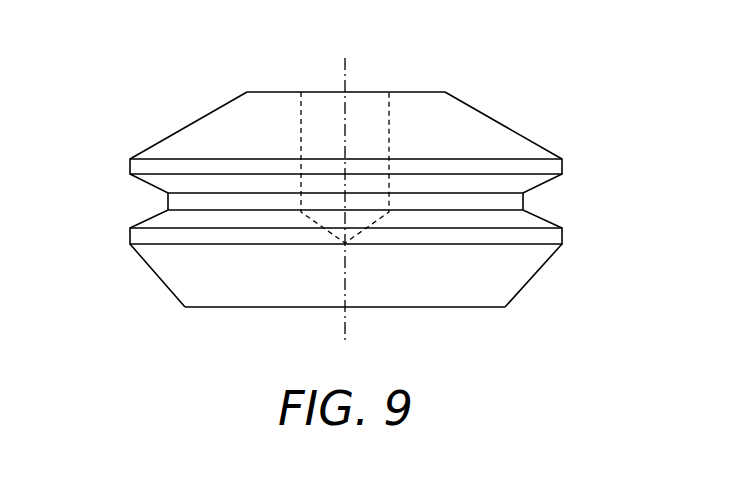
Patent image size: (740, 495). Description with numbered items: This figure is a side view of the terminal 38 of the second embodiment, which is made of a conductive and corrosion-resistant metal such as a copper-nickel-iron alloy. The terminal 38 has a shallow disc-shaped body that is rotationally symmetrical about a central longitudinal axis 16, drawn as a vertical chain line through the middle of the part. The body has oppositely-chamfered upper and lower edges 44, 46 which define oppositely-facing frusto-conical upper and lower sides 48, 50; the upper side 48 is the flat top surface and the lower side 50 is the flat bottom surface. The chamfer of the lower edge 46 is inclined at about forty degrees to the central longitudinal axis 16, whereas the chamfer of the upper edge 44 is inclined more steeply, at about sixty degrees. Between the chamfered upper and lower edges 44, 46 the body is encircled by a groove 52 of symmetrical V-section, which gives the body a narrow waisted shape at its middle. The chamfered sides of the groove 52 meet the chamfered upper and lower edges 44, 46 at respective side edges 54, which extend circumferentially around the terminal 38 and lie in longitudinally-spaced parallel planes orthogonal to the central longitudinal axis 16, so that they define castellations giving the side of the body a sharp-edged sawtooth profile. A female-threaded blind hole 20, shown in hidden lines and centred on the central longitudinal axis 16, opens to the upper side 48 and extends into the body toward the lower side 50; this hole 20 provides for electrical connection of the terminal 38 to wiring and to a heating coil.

The terminal 38 is at (566, 108).
The upper edge 44 is at (200, 118).
The upper side 48 is at (272, 102).
The side edges 54 is at (129, 165).
The groove 52 is at (526, 200).
The lower edge 46 is at (540, 272).
The lower side 50 is at (470, 300).
The blind hole 20 is at (320, 102).
The central longitudinal axis 16 is at (347, 69).